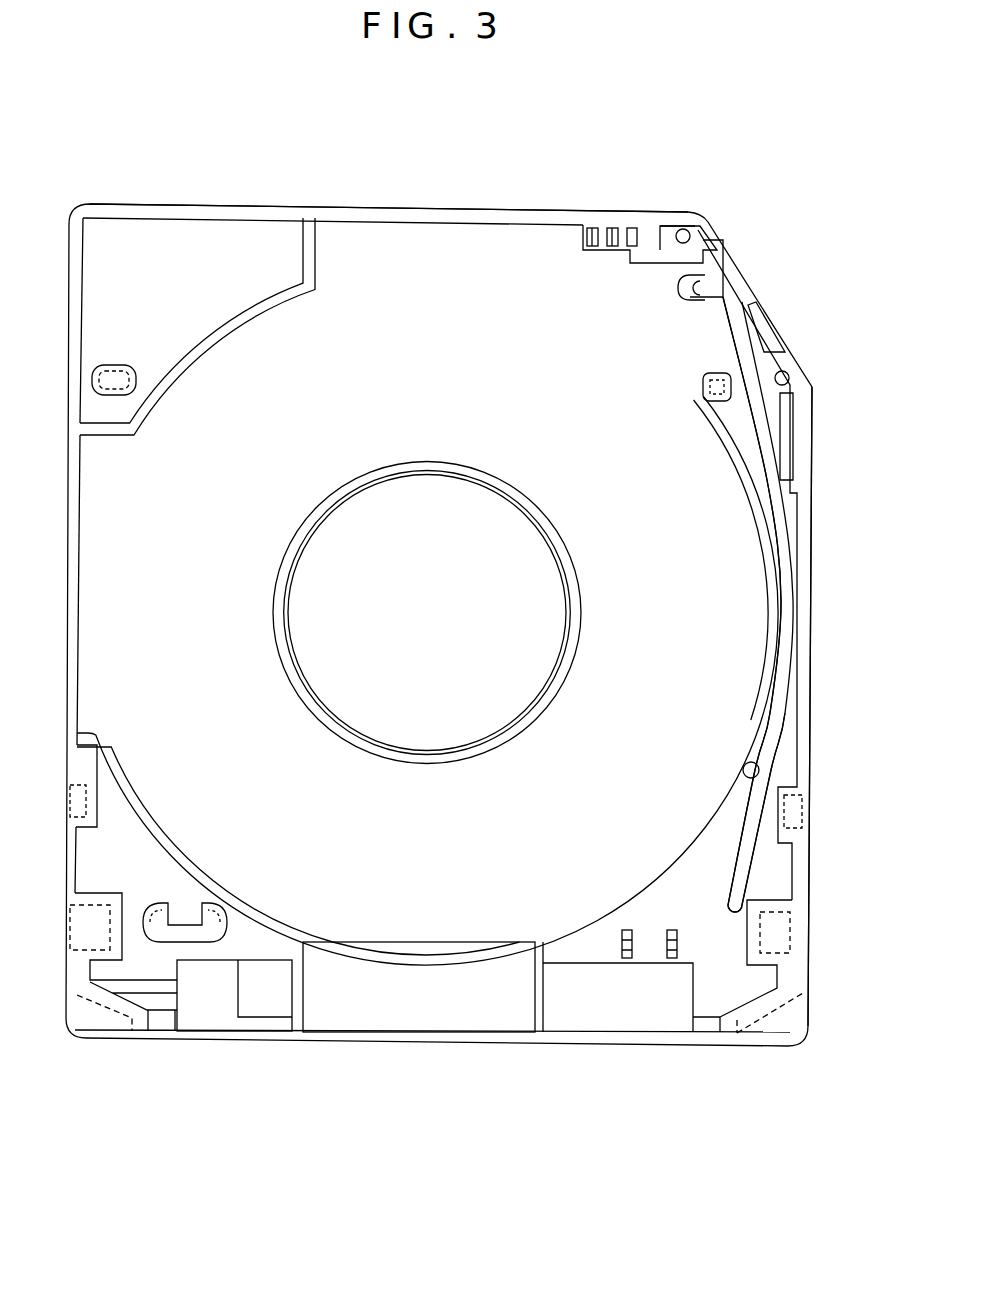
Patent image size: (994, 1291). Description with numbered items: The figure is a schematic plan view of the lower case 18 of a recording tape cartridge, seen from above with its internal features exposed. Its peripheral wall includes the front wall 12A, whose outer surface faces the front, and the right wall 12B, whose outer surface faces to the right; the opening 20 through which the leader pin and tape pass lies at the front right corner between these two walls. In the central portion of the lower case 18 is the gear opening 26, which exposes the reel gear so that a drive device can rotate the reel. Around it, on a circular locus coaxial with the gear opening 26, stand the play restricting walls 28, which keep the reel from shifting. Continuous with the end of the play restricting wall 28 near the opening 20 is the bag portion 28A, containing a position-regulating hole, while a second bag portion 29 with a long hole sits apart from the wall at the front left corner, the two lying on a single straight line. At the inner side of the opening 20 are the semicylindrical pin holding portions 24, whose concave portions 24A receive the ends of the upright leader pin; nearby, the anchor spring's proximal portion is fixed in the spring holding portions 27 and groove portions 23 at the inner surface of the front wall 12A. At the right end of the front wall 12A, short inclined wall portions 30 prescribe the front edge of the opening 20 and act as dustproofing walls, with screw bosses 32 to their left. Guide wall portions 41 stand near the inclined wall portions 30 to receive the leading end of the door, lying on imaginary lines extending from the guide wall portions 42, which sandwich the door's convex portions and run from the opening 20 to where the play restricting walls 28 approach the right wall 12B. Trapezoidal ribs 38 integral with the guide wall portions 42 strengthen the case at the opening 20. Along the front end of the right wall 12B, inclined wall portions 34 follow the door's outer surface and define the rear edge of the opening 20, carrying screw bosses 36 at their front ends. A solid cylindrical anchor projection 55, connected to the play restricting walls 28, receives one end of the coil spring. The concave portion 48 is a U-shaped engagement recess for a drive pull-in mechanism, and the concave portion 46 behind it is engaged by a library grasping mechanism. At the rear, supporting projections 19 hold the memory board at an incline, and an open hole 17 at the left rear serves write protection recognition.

The lower case 18 is at (596, 1020).
The front wall 12A is at (372, 205).
The right wall 12B is at (811, 615).
The play restricting wall 28 is at (172, 382).
The bag portion 28A is at (702, 386).
The gear opening 26 is at (393, 476).
The bag portion 29 is at (112, 366).
The groove portions 23 is at (640, 227).
The spring holding portions 27 is at (603, 250).
The screw bosses 32 is at (683, 228).
The inclined wall portions 30 is at (720, 250).
The guide wall portions 41 is at (733, 270).
The opening 20 is at (771, 294).
The pin holding portions 24 is at (689, 300).
The concave portions 24A is at (698, 302).
The inclined wall portions 34 is at (771, 468).
The guide wall portions 42 is at (735, 858).
The ribs 38 is at (775, 330).
The screw bosses 36 is at (790, 378).
The anchor projection 55 is at (744, 763).
The concave portion 48 is at (68, 808).
The concave portion 46 is at (70, 920).
The open hole 17 is at (183, 905).
The supporting projections 19 is at (668, 928).